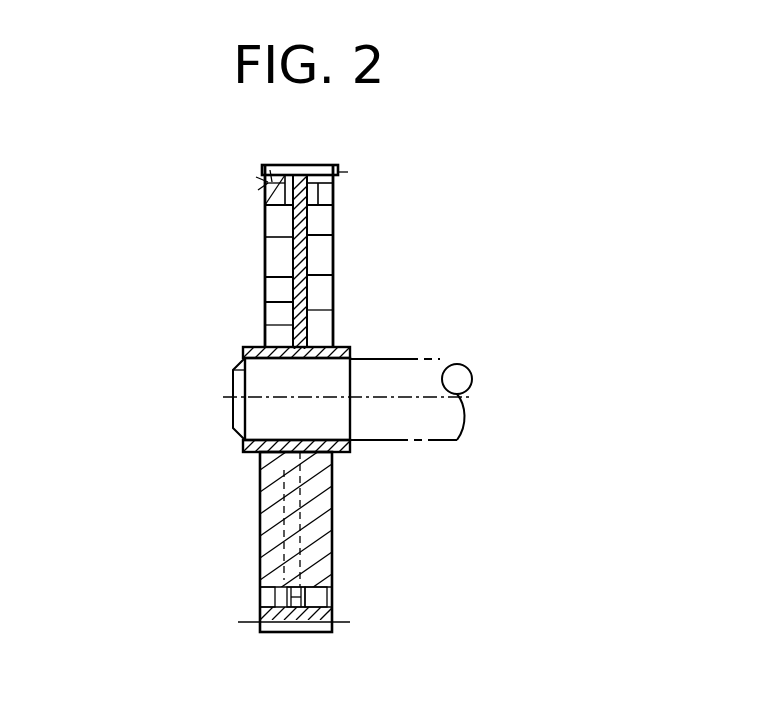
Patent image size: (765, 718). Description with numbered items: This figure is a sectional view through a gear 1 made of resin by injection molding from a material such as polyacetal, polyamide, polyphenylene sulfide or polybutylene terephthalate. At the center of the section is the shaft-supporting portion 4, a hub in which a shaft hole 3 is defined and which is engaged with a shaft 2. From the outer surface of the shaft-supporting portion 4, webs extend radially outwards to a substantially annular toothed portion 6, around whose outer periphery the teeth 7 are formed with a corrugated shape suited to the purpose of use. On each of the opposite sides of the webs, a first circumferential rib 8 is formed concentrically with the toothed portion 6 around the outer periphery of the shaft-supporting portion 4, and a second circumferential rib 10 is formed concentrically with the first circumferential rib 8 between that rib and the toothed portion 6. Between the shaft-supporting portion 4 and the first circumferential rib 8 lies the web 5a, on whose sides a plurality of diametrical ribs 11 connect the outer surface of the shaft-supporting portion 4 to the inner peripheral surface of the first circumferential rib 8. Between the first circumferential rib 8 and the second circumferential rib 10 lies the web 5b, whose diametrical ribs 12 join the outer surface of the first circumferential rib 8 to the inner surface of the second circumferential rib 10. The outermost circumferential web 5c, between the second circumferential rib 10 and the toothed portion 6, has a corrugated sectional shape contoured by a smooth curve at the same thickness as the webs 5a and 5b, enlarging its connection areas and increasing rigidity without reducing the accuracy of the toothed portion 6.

The gear 1 is at (340, 196).
The shaft 2 is at (440, 360).
The shaft hole 3 is at (310, 433).
The shaft-supporting portion 4 is at (248, 450).
The web 5a is at (263, 307).
The web 5b is at (333, 235).
The outermost circumferential web 5c is at (263, 202).
The toothed portion 6 is at (267, 176).
The teeth 7 is at (297, 165).
The first circumferential rib 8 is at (263, 280).
The second circumferential rib 10 is at (333, 210).
The diametrical ribs 11 is at (263, 327).
The diametrical ribs 12 is at (263, 237).